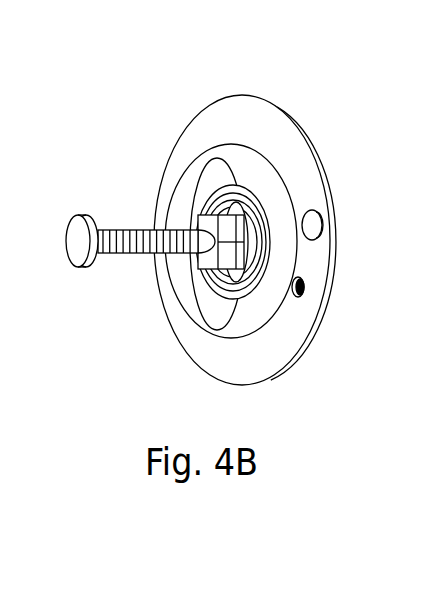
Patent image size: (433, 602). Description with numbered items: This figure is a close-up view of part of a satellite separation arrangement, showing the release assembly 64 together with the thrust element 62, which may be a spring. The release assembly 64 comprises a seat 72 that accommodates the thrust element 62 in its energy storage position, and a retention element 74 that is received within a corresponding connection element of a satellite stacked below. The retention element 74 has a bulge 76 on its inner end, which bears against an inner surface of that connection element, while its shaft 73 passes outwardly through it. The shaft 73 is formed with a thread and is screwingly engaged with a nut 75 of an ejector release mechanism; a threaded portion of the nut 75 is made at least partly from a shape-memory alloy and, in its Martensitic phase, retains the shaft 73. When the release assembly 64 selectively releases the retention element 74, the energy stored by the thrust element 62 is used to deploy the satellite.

The thrust element 62 is at (432, 193).
The release assembly 64 is at (288, 88).
The seat 72 is at (222, 180).
The shaft 73 is at (122, 254).
The retention element 74 is at (107, 214).
The nut 75 is at (211, 252).
The bulge 76 is at (80, 242).